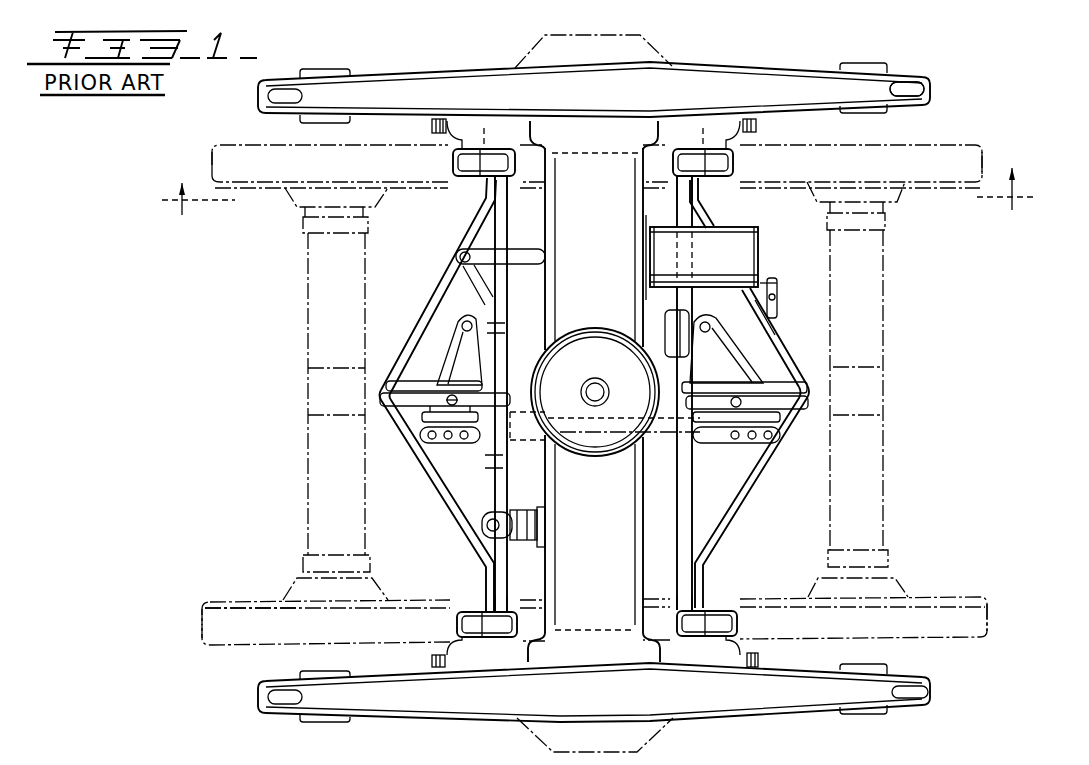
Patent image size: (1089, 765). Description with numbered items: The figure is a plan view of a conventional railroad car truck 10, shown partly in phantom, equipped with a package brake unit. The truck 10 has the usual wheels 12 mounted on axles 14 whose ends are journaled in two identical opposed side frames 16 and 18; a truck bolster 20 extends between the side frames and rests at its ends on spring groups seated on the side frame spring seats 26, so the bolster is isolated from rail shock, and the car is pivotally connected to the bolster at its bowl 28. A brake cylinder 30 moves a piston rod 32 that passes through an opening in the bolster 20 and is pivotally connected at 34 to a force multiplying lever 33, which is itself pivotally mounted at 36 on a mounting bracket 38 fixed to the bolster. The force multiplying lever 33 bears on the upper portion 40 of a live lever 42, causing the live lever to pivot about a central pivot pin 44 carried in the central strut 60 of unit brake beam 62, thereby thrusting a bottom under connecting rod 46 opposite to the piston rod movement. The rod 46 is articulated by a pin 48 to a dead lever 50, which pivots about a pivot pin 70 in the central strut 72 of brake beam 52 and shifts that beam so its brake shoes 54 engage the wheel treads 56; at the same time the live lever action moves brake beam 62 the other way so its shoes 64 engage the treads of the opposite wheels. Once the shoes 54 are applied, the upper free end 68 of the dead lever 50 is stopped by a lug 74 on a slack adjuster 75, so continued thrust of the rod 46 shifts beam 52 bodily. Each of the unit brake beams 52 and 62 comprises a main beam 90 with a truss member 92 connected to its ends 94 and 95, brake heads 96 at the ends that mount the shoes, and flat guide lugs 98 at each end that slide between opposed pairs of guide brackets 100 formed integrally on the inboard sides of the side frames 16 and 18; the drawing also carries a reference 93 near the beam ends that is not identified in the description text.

The railroad car truck 10 is at (1020, 87).
The wheels 12 is at (250, 206).
The axles 14 is at (298, 465).
The side frame 16 is at (932, 75).
The side frame 18 is at (255, 718).
The truck bolster 20 is at (658, 472).
The side frame spring seats 26 is at (240, 633).
The bowl 28 is at (596, 352).
The cylinder 30 is at (758, 248).
The piston rod 32 is at (538, 252).
The force multiplying lever 33 is at (495, 312).
The pivotal connection 34 is at (460, 256).
The pivot 36 is at (503, 530).
The mounting bracket 38 is at (522, 508).
The upper portion of live lever 40 is at (455, 345).
The live lever 42 is at (445, 388).
The central pivot pin 44 is at (432, 410).
The bottom under connecting rod 46 is at (527, 425).
The pin 48 is at (755, 438).
The dead lever 50 is at (800, 375).
The brake beam 52 is at (812, 333).
The brake shoes 54 is at (738, 163).
The wheel treads 56 is at (258, 166).
The central strut 60 is at (412, 385).
The unit brake beam 62 is at (440, 527).
The shoes 64 is at (450, 162).
The upper free end of dead lever 68 is at (716, 350).
The pivot pin 70 is at (778, 402).
The central strut 72 is at (850, 370).
The lug 74 is at (660, 330).
The slack adjuster 75 is at (780, 283).
The main beam 90 is at (500, 215).
The truss member 92 is at (435, 290).
The axis line 93 is at (508, 128).
The main beam end 94 is at (502, 188).
The main beam end 95 is at (500, 608).
The brake heads 96 is at (504, 157).
The guide lugs 98 is at (458, 122).
The guide brackets 100 is at (480, 118).